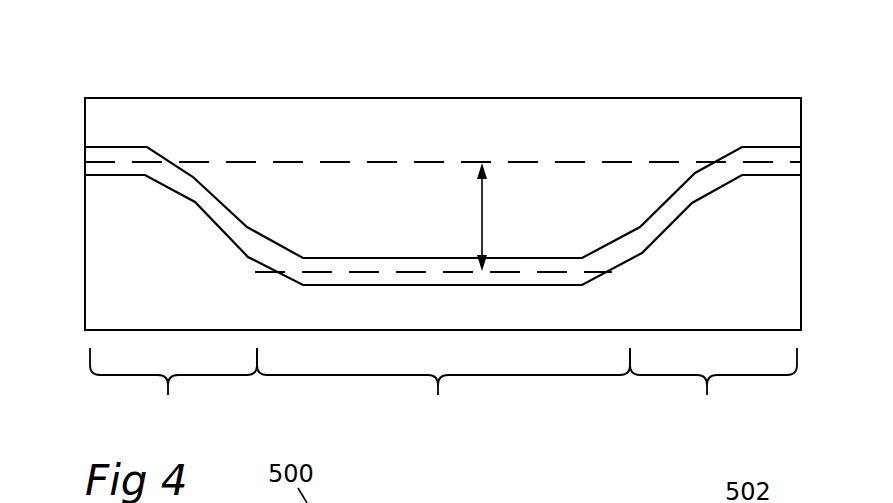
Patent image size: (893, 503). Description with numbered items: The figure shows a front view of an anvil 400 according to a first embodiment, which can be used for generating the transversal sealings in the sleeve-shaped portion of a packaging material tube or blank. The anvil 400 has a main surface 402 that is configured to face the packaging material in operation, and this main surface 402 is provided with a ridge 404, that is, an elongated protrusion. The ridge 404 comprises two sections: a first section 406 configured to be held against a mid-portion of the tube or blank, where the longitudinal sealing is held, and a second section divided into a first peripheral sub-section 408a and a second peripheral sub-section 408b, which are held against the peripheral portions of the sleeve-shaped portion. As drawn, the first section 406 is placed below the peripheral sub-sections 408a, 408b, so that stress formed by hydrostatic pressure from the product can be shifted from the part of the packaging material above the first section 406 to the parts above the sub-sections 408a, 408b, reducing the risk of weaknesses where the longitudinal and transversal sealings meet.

The anvil 400 is at (422, 165).
The main surface 402 is at (150, 66).
The ridge 404 is at (262, 257).
The first section 406 is at (443, 391).
The first peripheral sub-section 408a is at (173, 392).
The second peripheral sub-section 408b is at (713, 391).